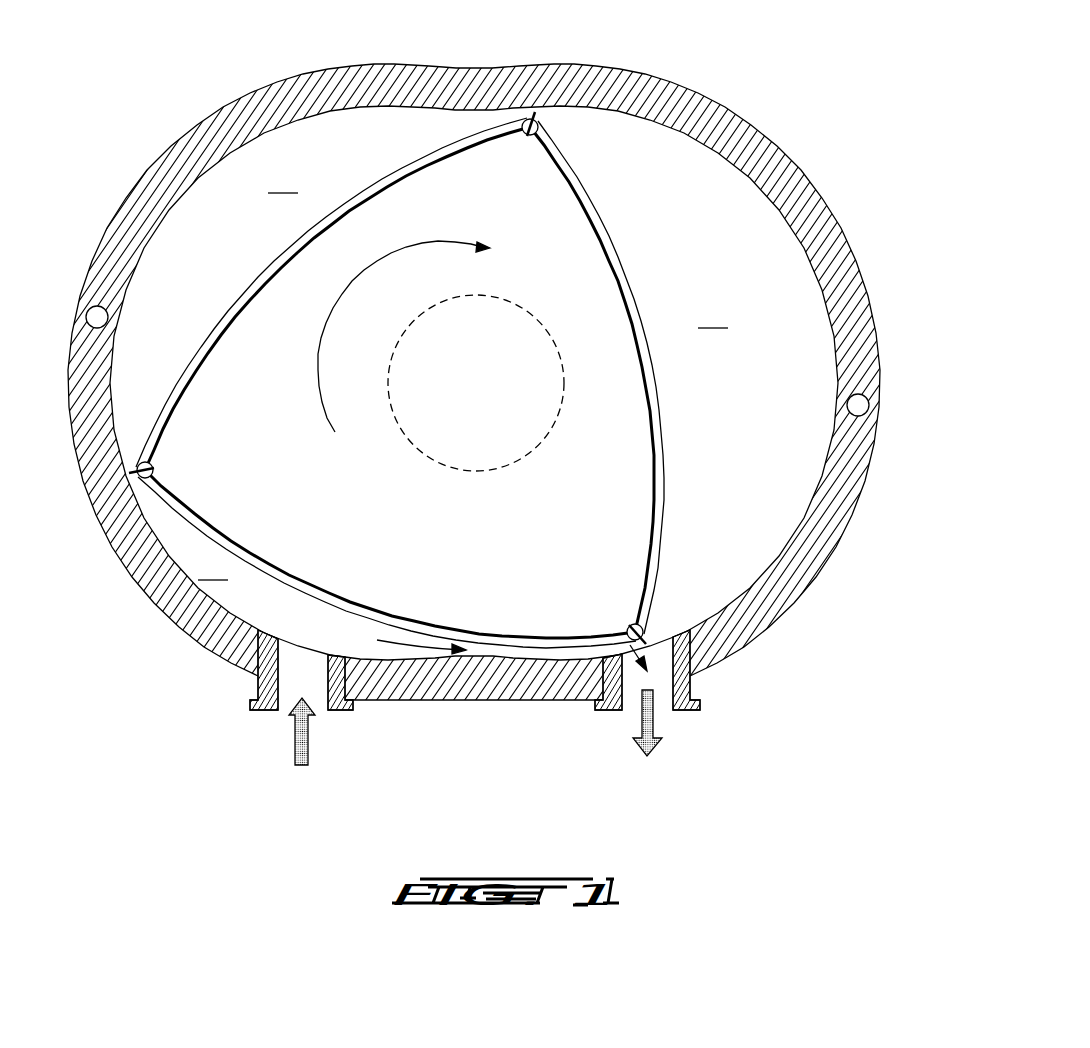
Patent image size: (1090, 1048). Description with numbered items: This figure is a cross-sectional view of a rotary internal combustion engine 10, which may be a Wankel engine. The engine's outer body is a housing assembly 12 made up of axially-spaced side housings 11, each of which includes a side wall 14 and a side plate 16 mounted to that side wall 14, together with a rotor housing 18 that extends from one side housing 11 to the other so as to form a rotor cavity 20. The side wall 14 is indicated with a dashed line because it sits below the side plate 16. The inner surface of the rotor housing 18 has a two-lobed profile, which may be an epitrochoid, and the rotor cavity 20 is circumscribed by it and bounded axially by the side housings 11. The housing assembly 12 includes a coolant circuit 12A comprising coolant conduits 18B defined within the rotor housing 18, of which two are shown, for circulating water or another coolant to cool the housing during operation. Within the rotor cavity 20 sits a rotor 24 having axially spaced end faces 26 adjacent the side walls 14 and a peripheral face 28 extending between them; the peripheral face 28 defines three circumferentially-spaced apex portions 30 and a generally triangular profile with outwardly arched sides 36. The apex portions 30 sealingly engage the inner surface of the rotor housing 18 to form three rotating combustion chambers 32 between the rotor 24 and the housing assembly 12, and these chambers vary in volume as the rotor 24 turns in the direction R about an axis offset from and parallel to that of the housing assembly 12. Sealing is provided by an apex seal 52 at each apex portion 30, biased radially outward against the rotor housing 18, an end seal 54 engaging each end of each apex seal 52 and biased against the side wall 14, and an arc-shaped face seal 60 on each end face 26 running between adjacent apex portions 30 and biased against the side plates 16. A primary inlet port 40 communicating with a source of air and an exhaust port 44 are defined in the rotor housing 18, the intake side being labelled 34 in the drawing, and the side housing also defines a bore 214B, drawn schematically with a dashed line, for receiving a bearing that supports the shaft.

The rotary internal combustion engine 10 is at (117, 131).
The side housings 11 is at (686, 183).
The housing assembly 12 is at (520, 387).
The coolant circuit 12A is at (869, 405).
The side wall 14 is at (782, 318).
The side plate 16 is at (755, 255).
The rotor housing 18 is at (849, 364).
The coolant conduits 18B is at (97, 306).
The rotor cavity 20 is at (758, 458).
The rotor 24 is at (436, 350).
The end faces 26 is at (503, 173).
The peripheral face 28 is at (428, 150).
The apex portions 30 is at (656, 645).
The combustion chambers 32 is at (463, 372).
The intake port 34 is at (262, 578).
The outwardly arched sides 36 is at (258, 272).
The primary inlet port 40 is at (287, 697).
The exhaust port 44 is at (660, 697).
The apex seal 52 is at (109, 453).
The end seal 54 is at (146, 466).
The face seal 60 is at (194, 516).
The bore 214B is at (513, 463).
The direction of rotation R is at (347, 294).